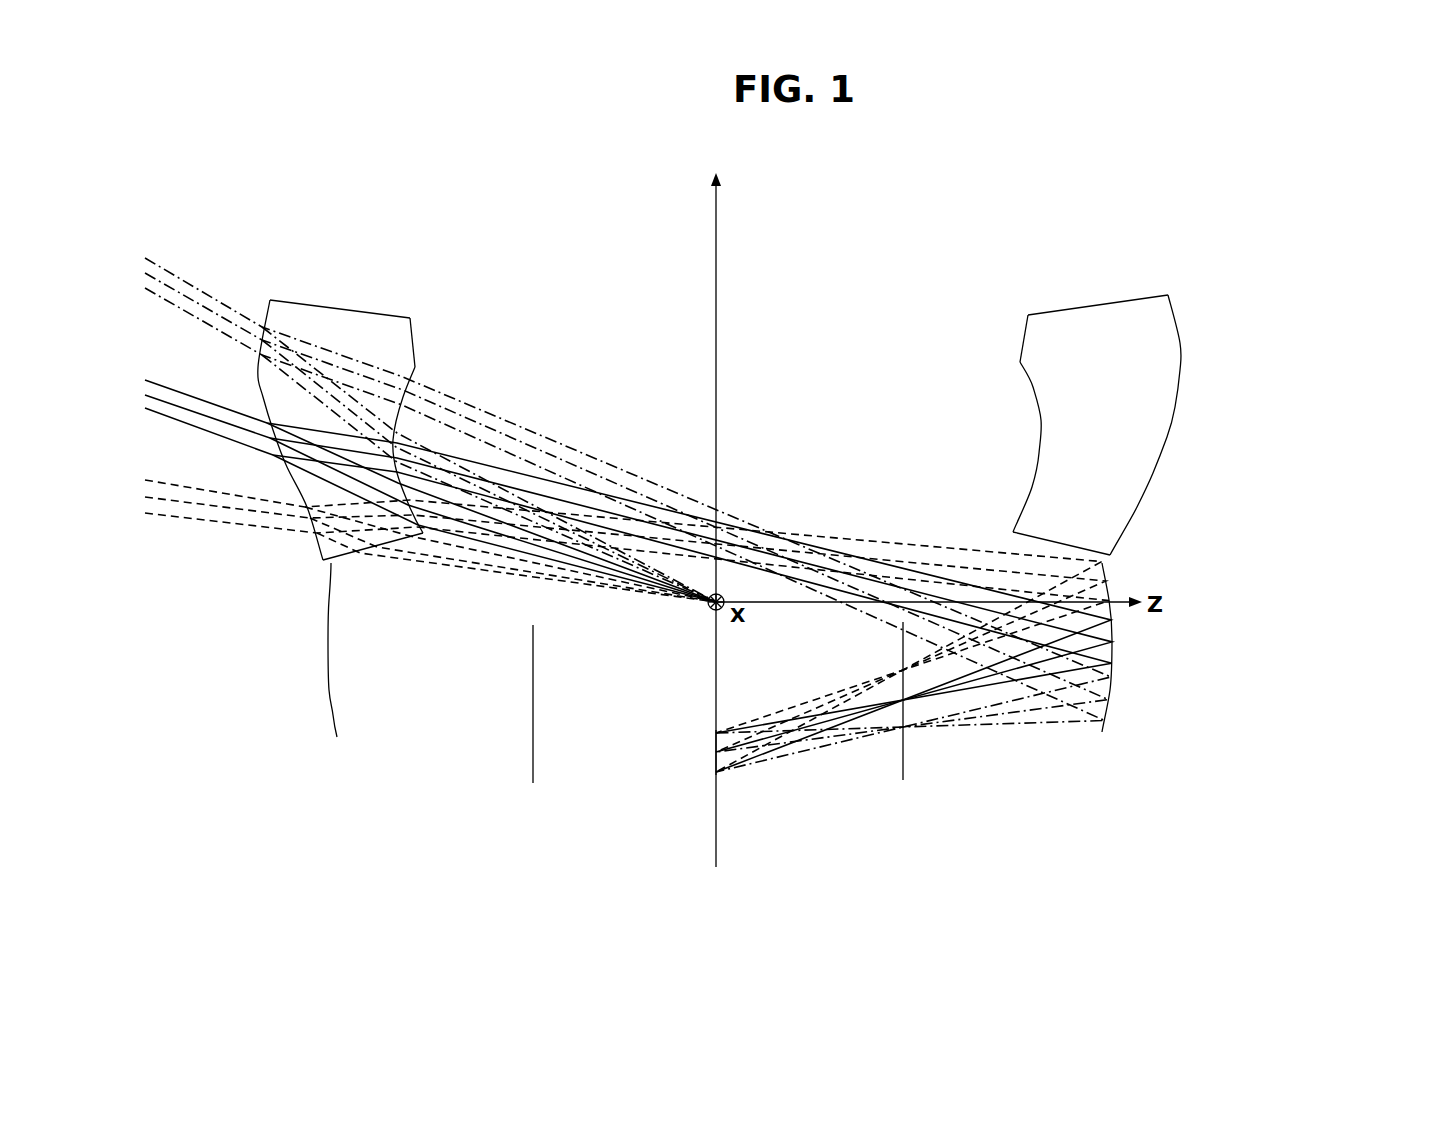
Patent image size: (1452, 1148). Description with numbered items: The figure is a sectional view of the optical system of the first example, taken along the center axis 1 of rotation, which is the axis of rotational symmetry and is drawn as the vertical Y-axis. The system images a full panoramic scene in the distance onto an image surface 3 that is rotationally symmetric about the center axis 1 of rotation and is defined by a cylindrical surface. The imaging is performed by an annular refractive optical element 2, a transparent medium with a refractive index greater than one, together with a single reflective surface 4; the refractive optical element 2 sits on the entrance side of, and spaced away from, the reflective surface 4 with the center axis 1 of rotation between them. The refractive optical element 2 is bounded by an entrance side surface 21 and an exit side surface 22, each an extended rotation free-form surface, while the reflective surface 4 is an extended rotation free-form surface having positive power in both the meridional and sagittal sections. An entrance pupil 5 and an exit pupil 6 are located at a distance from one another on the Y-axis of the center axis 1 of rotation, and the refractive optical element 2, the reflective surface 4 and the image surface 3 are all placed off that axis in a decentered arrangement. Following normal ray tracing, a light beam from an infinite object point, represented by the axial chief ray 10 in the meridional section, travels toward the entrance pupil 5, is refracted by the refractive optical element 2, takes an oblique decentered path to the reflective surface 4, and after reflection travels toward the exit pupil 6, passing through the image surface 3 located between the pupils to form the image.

The center axis of rotation 1 is at (717, 262).
The refractive optical element 2 is at (1190, 298).
The image surface 3 is at (903, 770).
The reflective surface 4 is at (1103, 700).
The entrance pupil 5 is at (704, 618).
The exit pupil 6 is at (703, 762).
The axial chief ray 10 is at (332, 430).
The entrance side surface 21 is at (258, 379).
The exit side surface 22 is at (403, 400).